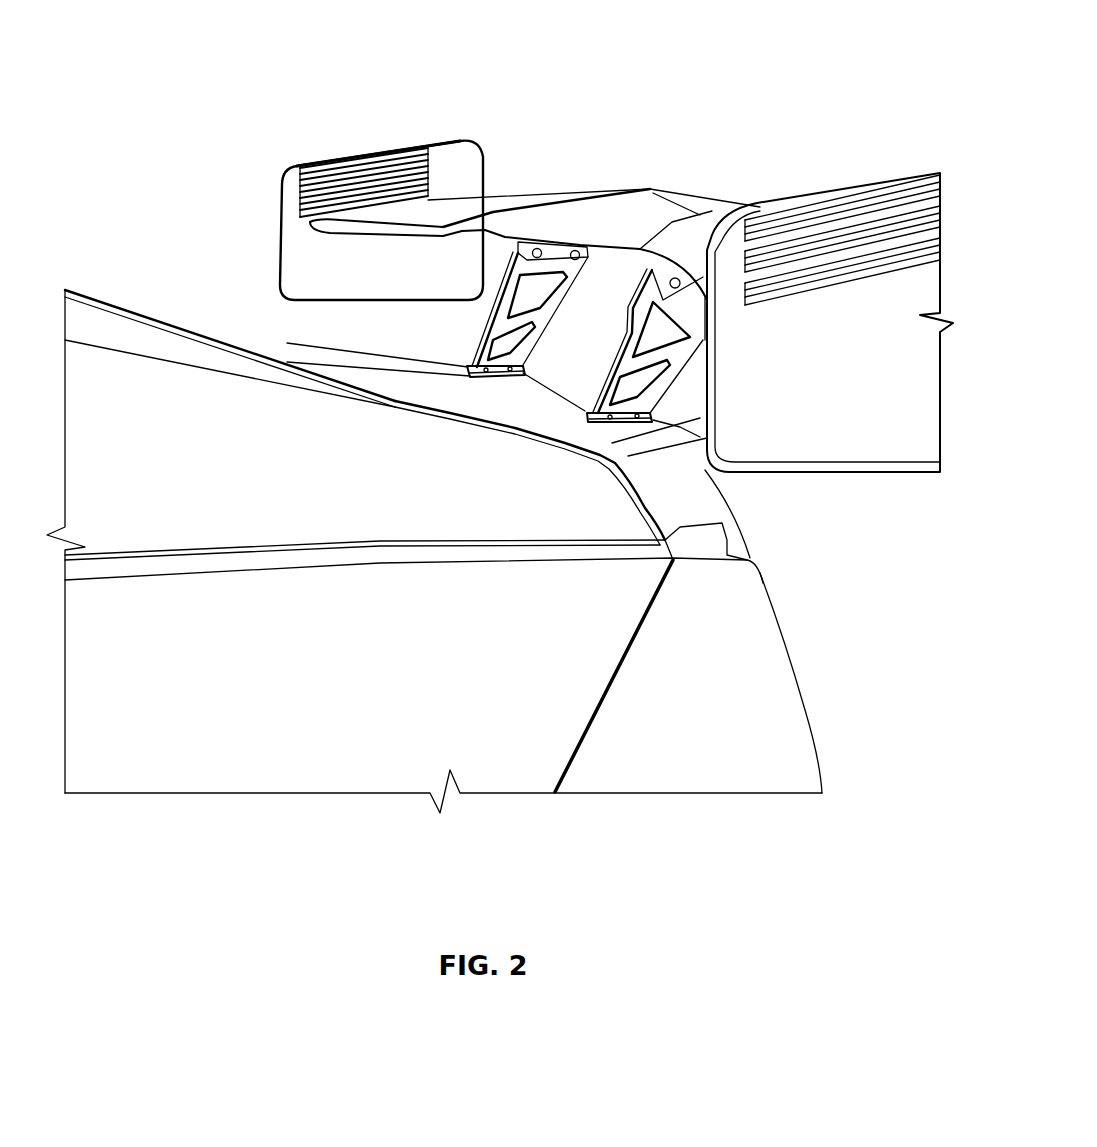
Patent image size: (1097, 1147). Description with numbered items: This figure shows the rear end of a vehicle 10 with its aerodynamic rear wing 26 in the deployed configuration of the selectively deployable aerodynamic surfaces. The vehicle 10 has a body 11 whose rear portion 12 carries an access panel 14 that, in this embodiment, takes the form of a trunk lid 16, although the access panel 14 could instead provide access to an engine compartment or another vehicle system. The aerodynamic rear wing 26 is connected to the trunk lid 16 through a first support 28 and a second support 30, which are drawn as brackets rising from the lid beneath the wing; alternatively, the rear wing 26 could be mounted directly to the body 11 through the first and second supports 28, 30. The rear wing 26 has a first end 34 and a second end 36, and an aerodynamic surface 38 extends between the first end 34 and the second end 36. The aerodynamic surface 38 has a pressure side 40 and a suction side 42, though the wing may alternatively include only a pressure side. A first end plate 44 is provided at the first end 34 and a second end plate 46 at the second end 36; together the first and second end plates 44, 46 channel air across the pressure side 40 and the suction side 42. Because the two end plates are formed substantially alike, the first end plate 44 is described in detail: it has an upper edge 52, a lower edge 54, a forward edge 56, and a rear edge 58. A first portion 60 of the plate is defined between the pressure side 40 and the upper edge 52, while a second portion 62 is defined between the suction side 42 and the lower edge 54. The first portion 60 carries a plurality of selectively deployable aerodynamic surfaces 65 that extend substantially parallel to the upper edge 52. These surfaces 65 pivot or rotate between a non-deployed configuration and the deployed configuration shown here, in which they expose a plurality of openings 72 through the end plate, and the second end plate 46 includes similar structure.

The vehicle 10 is at (222, 47).
The body 11 is at (186, 748).
The rear portion 12 is at (432, 686).
The access panel 14 is at (408, 397).
The trunk lid 16 is at (507, 422).
The aerodynamic rear wing 26 is at (652, 150).
The first support 28 is at (537, 317).
The second support 30 is at (650, 303).
The first end 34 is at (540, 242).
The second end 36 is at (700, 268).
The aerodynamic surface 38 is at (549, 199).
The pressure side 40 is at (676, 222).
The suction side 42 is at (690, 328).
The first end plate 44 is at (378, 205).
The second end plate 46 is at (821, 377).
The upper edge 52 is at (457, 137).
The lower edge 54 is at (400, 306).
The forward edge 56 is at (278, 260).
The rear edge 58 is at (487, 163).
The first portion 60 is at (470, 183).
The second portion 62 is at (318, 258).
The selectively deployable aerodynamic surfaces 65 is at (352, 142).
The openings 72 is at (403, 147).